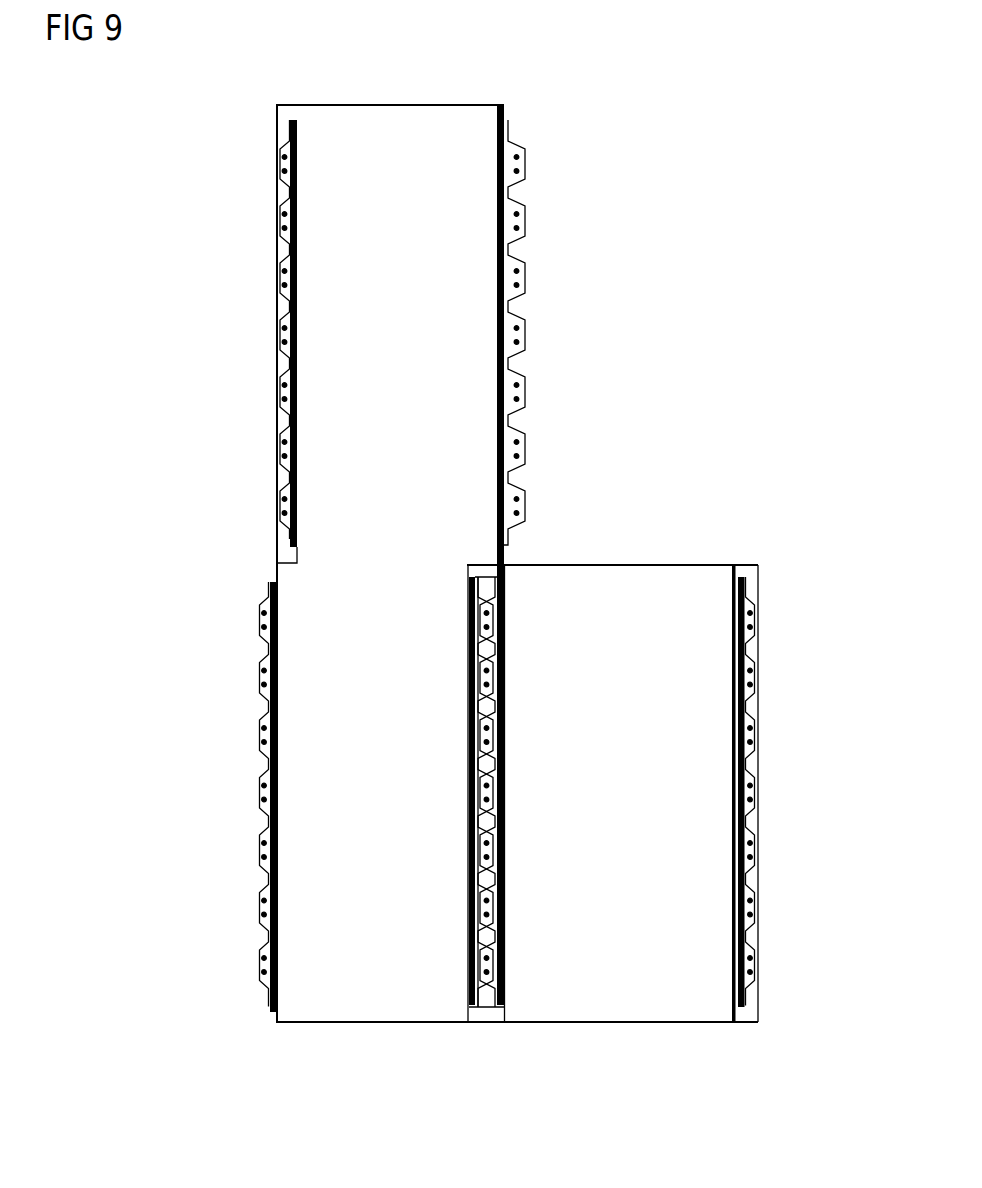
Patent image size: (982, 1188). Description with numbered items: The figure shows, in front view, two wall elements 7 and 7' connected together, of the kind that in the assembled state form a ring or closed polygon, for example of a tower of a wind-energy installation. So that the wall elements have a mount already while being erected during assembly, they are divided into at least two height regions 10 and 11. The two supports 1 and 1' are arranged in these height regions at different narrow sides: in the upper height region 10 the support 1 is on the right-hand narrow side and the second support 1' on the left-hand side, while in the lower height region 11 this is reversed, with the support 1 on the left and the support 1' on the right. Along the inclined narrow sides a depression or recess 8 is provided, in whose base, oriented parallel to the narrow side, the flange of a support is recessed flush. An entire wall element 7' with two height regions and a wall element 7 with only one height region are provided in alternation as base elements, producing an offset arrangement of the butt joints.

The upper height region 10 is at (450, 125).
The lower height region 11 is at (303, 655).
The precast concrete wall element 7 is at (612, 767).
The wall element 7' is at (273, 333).
The depression or recess 8 is at (283, 552).
The support 1 is at (388, 599).
The second support 1' is at (503, 607).